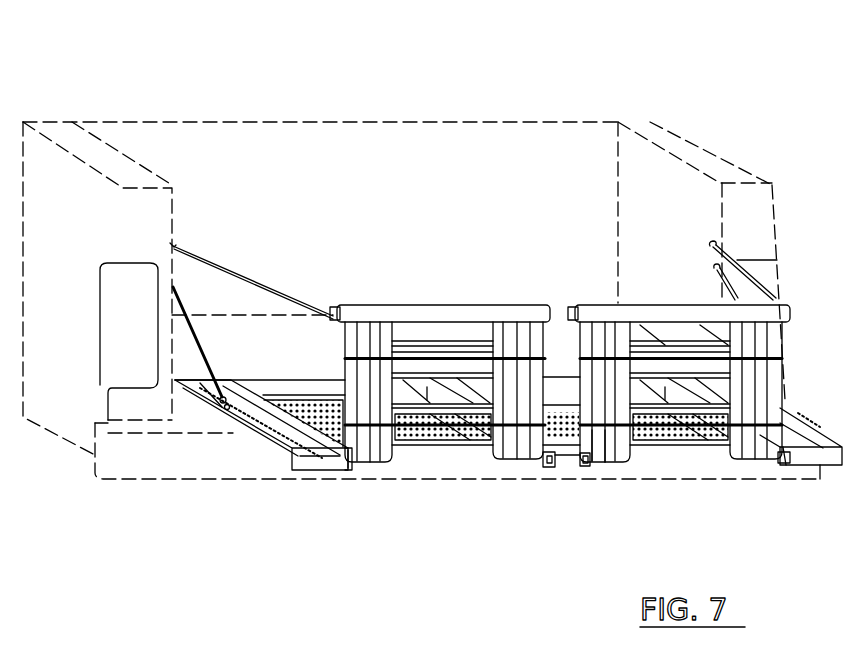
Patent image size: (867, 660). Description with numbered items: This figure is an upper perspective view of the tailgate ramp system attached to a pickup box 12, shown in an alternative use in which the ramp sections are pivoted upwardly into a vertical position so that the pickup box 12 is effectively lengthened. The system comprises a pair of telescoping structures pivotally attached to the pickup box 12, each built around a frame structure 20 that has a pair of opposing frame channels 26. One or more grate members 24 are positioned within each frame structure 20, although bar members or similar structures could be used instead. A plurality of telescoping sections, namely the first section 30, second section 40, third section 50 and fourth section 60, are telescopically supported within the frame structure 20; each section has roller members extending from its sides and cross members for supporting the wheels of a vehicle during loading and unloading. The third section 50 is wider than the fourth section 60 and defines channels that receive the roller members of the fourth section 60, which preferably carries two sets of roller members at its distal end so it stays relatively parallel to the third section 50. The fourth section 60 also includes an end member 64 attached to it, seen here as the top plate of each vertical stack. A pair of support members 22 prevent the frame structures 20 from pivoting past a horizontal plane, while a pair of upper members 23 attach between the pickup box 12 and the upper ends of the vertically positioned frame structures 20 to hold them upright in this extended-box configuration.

The pickup box 12 is at (378, 118).
The frame structure 20 is at (285, 473).
The support member 22 is at (197, 343).
The upper member 23 is at (238, 272).
The grate member 24 is at (412, 445).
The frame channel 26 is at (342, 460).
The first section 30 is at (587, 463).
The second section 40 is at (603, 463).
The third section 50 is at (610, 463).
The fourth section 60 is at (627, 463).
The end member 64 is at (608, 303).